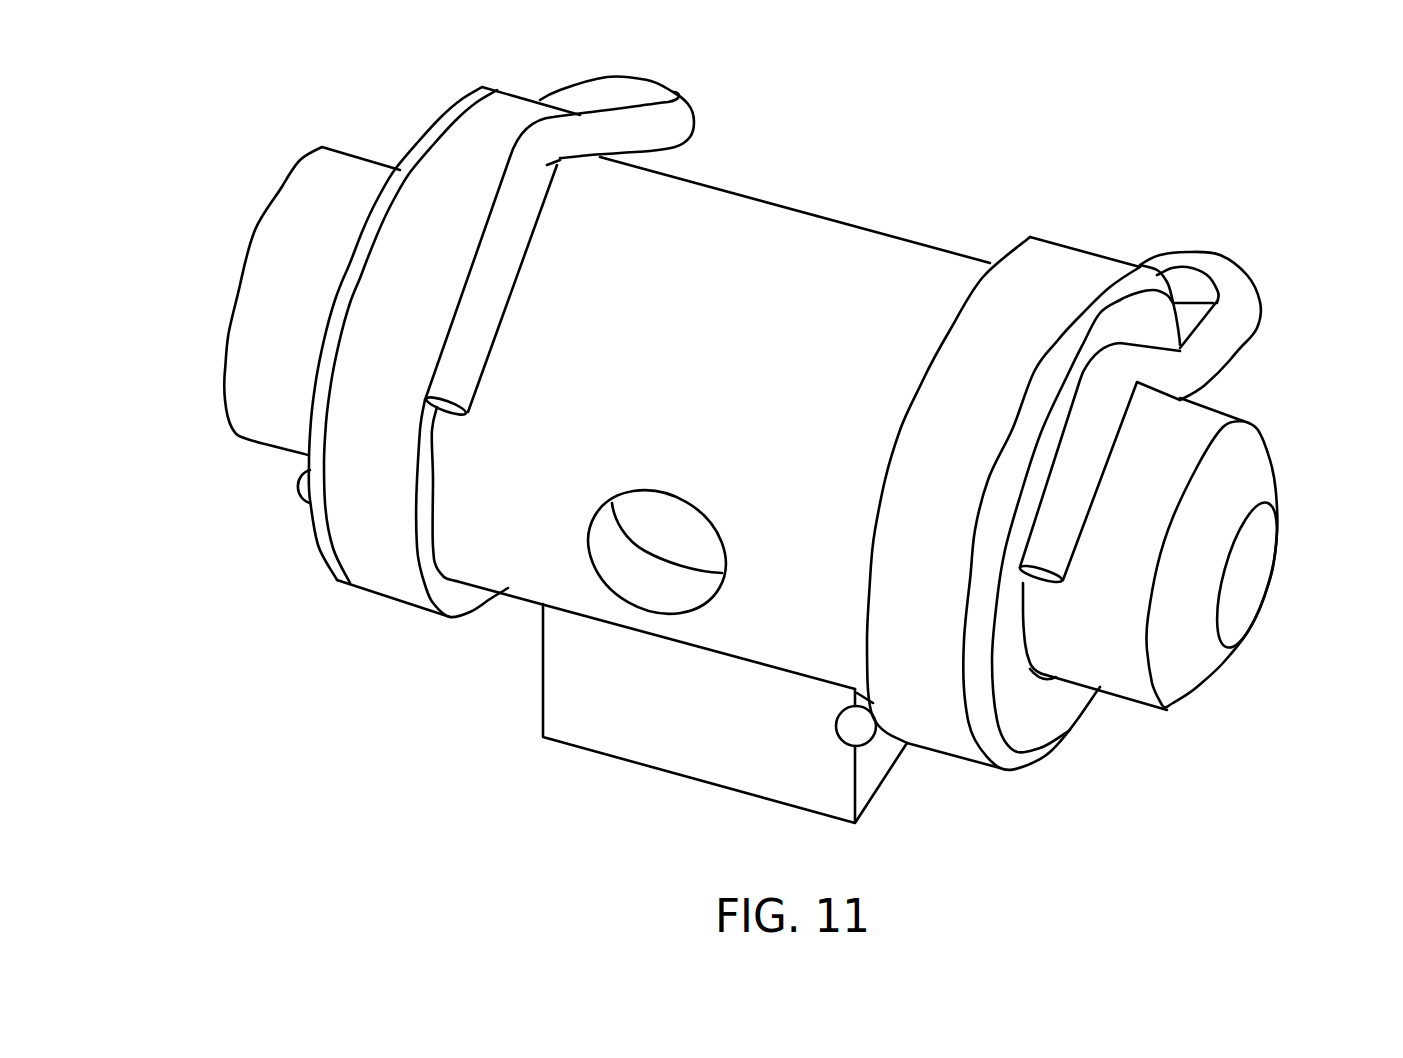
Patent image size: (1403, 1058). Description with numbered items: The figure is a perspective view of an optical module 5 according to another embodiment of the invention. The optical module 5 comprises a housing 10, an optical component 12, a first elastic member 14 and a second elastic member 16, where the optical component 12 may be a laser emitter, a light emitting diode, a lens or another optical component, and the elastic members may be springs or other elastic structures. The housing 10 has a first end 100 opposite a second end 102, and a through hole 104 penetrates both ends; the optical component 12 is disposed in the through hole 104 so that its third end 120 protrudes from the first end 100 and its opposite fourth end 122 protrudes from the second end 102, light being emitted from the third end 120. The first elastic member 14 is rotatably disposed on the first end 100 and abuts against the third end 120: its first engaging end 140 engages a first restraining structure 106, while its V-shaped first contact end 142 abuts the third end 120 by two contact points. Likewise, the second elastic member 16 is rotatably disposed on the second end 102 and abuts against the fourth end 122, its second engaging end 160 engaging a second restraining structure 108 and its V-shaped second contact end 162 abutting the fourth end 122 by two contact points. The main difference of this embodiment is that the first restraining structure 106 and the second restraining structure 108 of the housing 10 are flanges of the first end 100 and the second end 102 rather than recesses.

The optical module 5 is at (1258, 95).
The housing 10 is at (787, 230).
The optical component 12 is at (1122, 672).
The first elastic member 14 is at (1232, 273).
The second elastic member 16 is at (634, 93).
The first end 100 is at (1140, 308).
The second end 102 is at (400, 143).
The through hole 104 is at (1063, 698).
The first restraining structure 106 is at (1058, 262).
The second restraining structure 108 is at (492, 107).
The third end 120 is at (1183, 667).
The fourth end 122 is at (240, 278).
The first engaging end 140 is at (878, 738).
The first contact end 142 is at (1067, 503).
The second engaging end 160 is at (460, 350).
The second contact end 162 is at (290, 475).